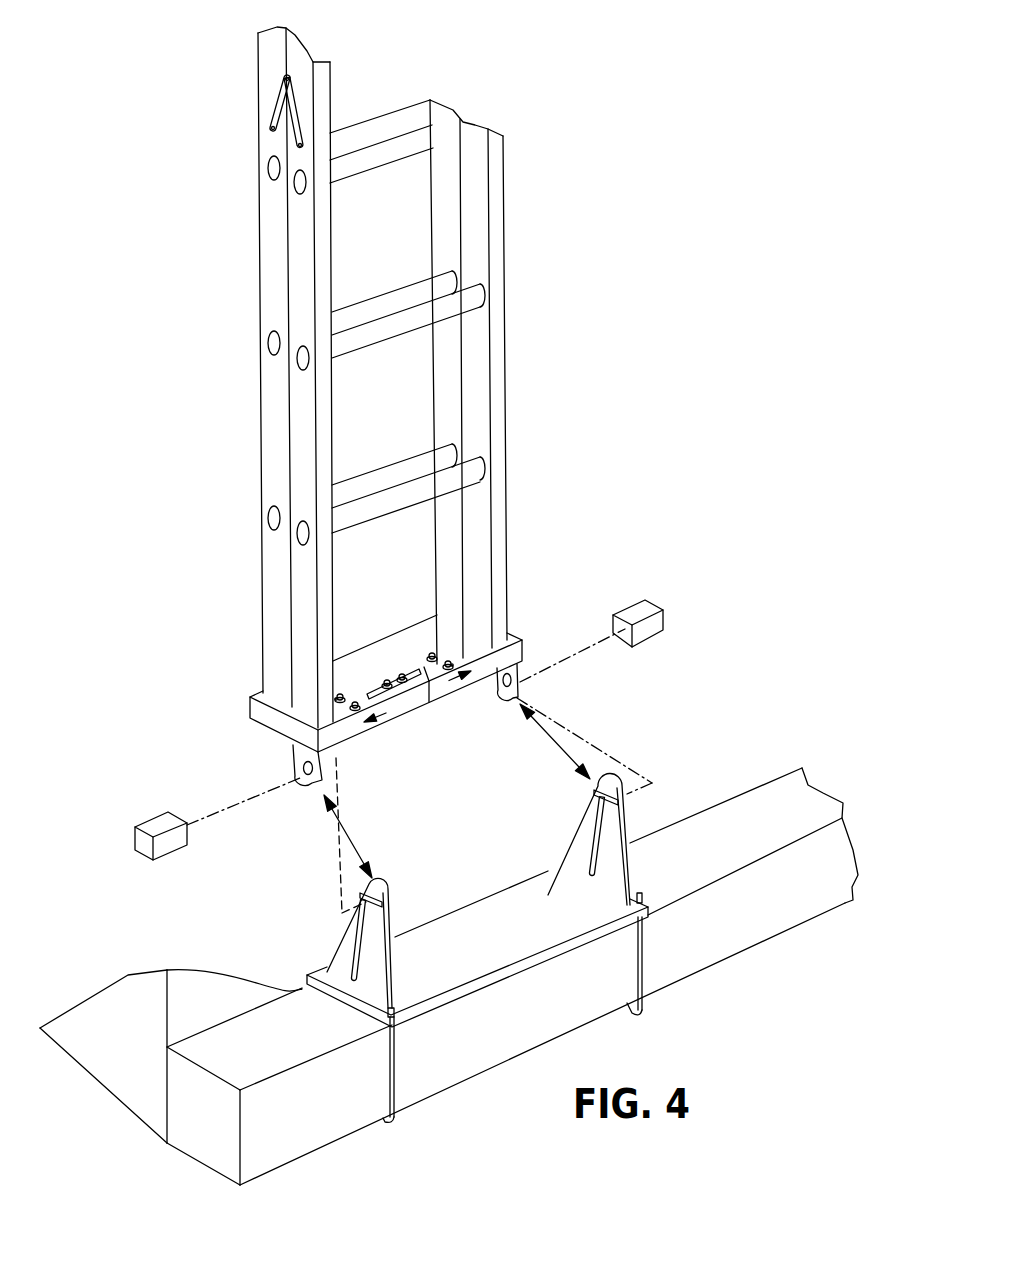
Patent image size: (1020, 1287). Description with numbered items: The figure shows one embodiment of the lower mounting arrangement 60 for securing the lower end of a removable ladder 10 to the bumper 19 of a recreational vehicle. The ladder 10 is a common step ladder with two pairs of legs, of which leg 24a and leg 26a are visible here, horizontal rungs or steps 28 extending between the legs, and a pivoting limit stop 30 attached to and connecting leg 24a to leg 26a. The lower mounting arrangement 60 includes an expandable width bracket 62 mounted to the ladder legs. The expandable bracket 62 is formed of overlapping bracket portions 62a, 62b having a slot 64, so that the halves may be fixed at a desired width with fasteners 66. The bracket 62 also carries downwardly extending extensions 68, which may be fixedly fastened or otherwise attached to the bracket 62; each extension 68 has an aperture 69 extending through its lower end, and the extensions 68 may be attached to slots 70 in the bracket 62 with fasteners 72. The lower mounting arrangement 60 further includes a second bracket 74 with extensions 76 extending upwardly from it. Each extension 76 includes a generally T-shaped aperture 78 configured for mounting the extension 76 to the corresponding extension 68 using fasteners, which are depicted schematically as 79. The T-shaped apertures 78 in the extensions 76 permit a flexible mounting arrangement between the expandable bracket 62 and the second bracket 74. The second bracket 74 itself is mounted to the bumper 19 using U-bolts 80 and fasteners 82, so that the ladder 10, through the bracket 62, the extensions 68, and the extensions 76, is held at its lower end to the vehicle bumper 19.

The removable ladder 10 is at (510, 50).
The bumper 19 is at (460, 1050).
The leg 24a is at (305, 304).
The leg 26a is at (270, 212).
The rungs or steps 28 is at (400, 325).
The pivoting limit stop 30 is at (284, 104).
The lower mounting arrangement 60 is at (628, 585).
The expandable width bracket 62 is at (376, 722).
The bracket portion 62a is at (398, 708).
The bracket portion 62b is at (428, 672).
The slot 64 is at (388, 684).
The fasteners 66 is at (402, 680).
The downwardly extending extension 68 is at (300, 784).
The aperture 69 is at (303, 766).
The slot 70 is at (330, 700).
The fasteners 72 is at (447, 663).
The second bracket 74 is at (500, 904).
The extension 76 is at (385, 947).
The T-shaped aperture 78 is at (358, 964).
The fasteners 79 is at (170, 850).
The U-bolts 80 is at (394, 1118).
The fasteners 82 is at (305, 976).